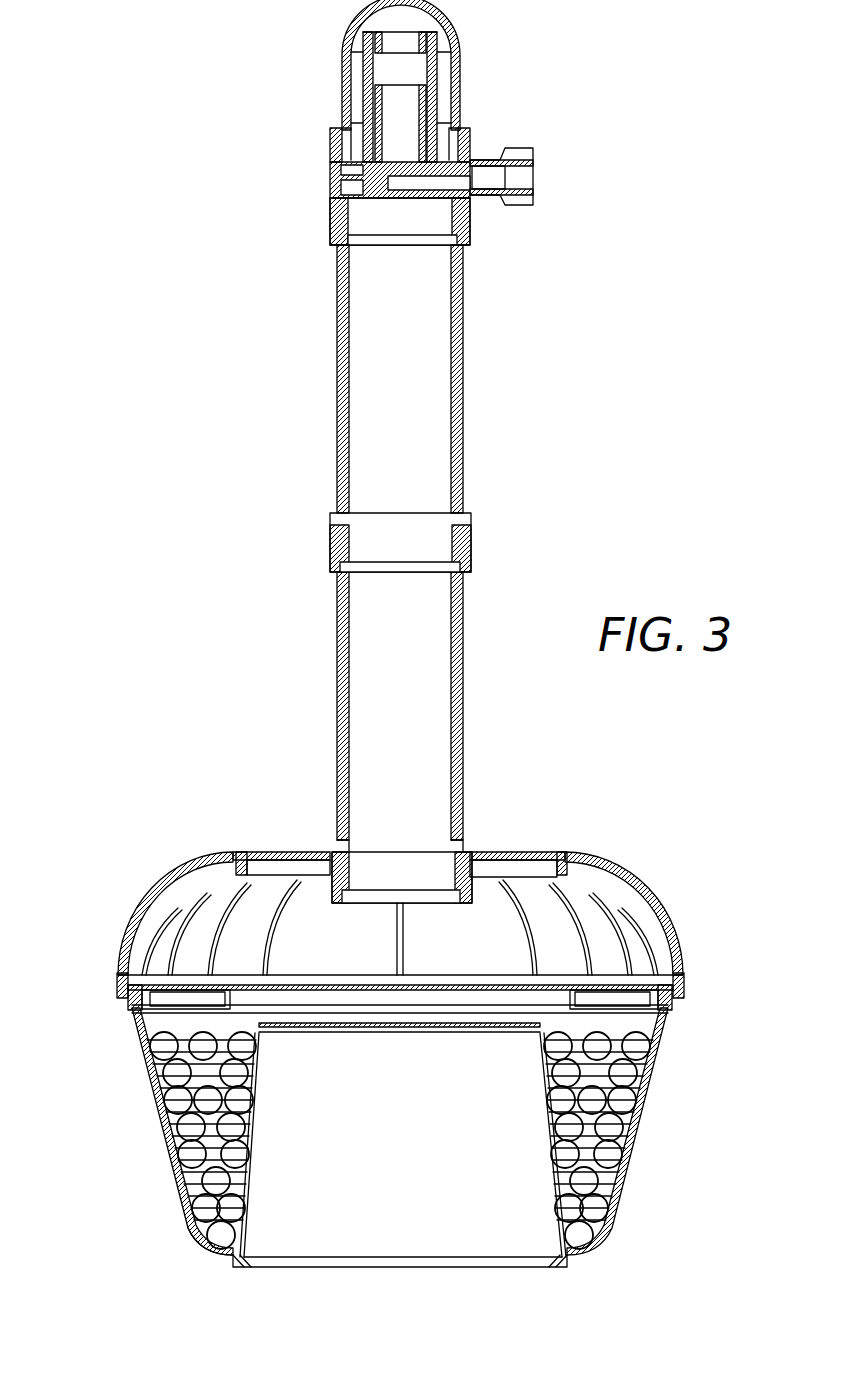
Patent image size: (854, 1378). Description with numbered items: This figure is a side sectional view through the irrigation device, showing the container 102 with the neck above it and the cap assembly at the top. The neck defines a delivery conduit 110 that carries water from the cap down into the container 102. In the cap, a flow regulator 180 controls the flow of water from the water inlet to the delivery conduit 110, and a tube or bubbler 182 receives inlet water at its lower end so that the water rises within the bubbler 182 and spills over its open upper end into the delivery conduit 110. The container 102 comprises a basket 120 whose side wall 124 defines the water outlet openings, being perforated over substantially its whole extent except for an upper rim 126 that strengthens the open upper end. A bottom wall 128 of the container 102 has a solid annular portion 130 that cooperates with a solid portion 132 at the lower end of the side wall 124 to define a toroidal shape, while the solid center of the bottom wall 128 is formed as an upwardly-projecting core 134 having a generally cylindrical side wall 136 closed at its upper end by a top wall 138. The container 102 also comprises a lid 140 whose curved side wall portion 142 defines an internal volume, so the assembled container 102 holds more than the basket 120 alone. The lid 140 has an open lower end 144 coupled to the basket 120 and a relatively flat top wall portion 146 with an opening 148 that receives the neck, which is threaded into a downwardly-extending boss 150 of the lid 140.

The container 102 is at (170, 828).
The delivery conduit 110 is at (440, 385).
The basket 120 is at (100, 1144).
The side wall 124 is at (162, 1160).
The upper rim 126 is at (127, 1003).
The bottom wall 128 is at (229, 1263).
The annular portion 130 is at (213, 1253).
The solid portion 132 is at (190, 1223).
The core 134 is at (265, 1178).
The side wall 136 is at (259, 1112).
The top wall 138 is at (386, 1040).
The lid 140 is at (626, 868).
The side wall portion 142 is at (155, 920).
The open lower end 144 is at (117, 995).
The top wall portion 146 is at (272, 853).
The opening 148 is at (350, 905).
The boss 150 is at (466, 866).
The flow regulator 180 is at (350, 183).
The bubbler 182 is at (345, 70).